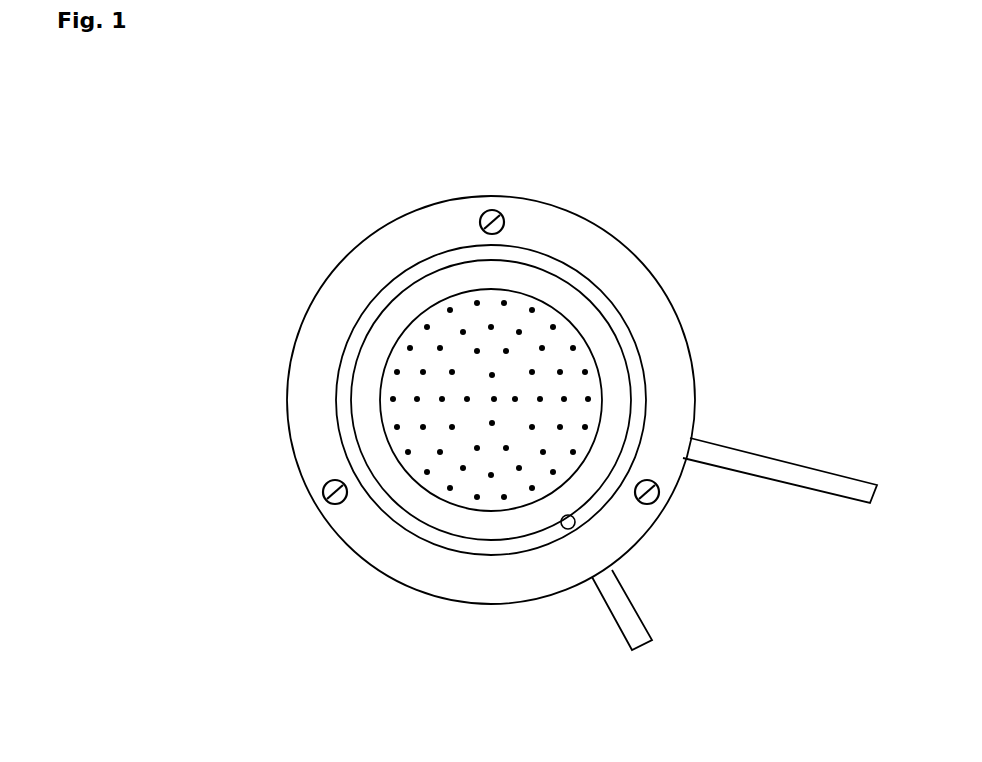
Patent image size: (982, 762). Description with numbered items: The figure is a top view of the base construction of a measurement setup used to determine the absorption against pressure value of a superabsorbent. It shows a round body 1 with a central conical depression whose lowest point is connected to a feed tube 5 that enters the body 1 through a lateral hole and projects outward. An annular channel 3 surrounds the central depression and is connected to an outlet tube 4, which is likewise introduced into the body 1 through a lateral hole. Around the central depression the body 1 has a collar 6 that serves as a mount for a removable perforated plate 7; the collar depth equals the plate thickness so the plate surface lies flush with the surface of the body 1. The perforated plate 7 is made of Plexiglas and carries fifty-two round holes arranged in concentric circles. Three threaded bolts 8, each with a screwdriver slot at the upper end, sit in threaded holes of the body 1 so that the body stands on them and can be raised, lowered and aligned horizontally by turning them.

The body 1 is at (667, 377).
The annular channel 3 is at (348, 425).
The outlet tube 4 is at (645, 648).
The feed tube 5 is at (860, 490).
The collar 6 is at (402, 333).
The perforated plate 7 is at (548, 370).
The threaded bolts 8 is at (484, 211).